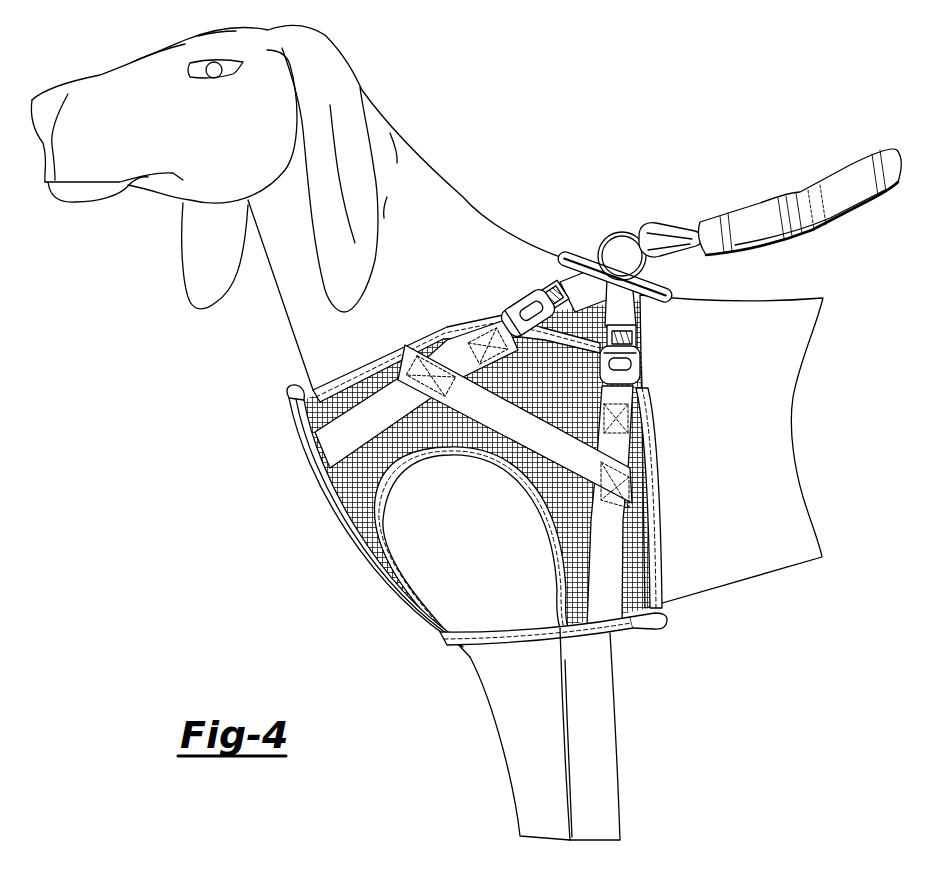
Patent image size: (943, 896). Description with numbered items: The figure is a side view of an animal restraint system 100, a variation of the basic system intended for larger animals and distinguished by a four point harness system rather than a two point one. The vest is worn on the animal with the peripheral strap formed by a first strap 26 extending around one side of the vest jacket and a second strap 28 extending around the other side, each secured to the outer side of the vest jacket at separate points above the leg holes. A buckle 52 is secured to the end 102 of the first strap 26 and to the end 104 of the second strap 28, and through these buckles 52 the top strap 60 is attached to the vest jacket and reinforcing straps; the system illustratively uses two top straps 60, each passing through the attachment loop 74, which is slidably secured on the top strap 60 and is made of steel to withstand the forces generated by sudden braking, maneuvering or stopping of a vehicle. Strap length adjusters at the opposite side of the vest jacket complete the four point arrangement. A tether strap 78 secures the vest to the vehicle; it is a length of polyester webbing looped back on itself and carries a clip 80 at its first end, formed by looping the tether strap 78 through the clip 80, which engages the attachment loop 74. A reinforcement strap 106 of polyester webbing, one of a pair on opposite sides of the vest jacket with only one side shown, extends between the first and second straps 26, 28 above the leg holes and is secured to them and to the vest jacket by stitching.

The animal restraint system 100 is at (692, 122).
The tether strap 78 is at (753, 205).
The clip 80 is at (653, 224).
The attachment loop 74 is at (615, 234).
The top strap 60 is at (556, 280).
The buckle 52 is at (513, 287).
The end of second strap 104 is at (453, 357).
The first strap 26 is at (447, 325).
The end of first strap 102 is at (638, 395).
The second strap 28 is at (623, 452).
The reinforcement strap 106 is at (587, 477).